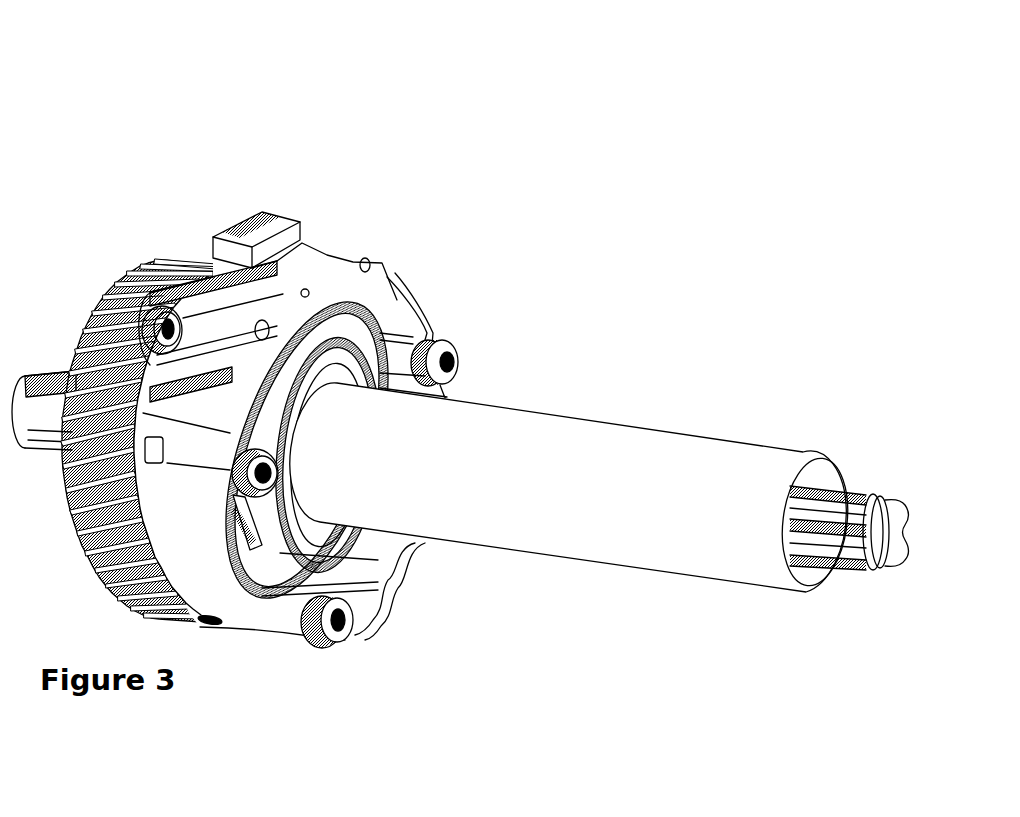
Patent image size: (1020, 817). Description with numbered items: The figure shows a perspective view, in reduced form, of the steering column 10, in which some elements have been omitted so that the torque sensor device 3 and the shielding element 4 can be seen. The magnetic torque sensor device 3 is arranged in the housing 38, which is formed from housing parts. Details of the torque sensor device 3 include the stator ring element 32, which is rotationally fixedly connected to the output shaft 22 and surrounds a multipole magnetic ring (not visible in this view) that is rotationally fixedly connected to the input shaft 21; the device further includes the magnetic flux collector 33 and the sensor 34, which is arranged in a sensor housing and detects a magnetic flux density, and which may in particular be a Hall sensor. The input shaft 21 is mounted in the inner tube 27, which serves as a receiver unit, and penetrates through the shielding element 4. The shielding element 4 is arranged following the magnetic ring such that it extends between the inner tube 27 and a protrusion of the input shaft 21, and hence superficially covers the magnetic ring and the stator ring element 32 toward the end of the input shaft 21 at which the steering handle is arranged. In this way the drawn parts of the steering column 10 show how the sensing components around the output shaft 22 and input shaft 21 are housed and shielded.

The steering column 10 is at (493, 140).
The output shaft 22 is at (48, 372).
The torque sensor device 3 is at (432, 300).
The housing 38 is at (415, 323).
The sensor 34 is at (413, 325).
The stator ring element 32 is at (278, 598).
The magnetic flux collector 33 is at (259, 598).
The shielding element 4 is at (290, 490).
The inner tube 27 is at (633, 510).
The input shaft 21 is at (840, 557).